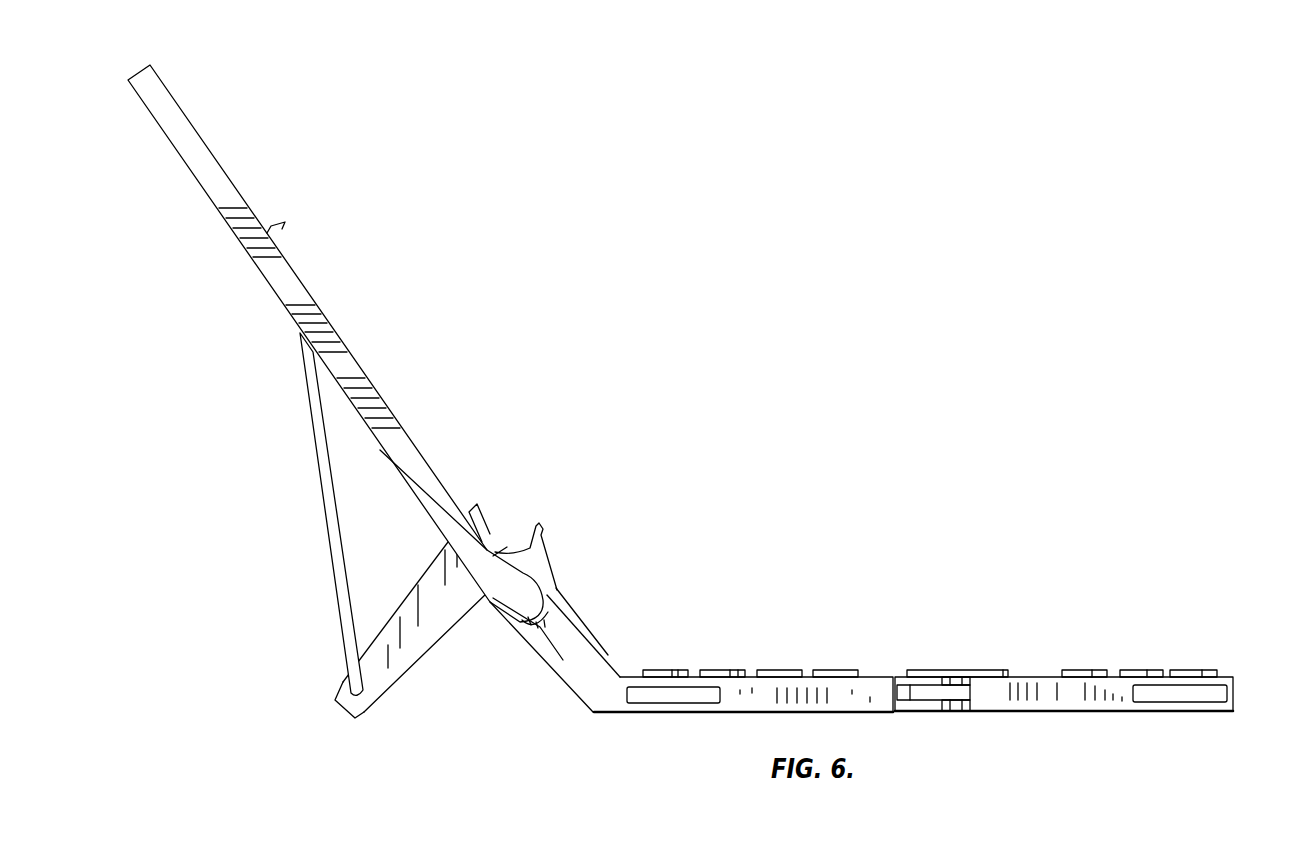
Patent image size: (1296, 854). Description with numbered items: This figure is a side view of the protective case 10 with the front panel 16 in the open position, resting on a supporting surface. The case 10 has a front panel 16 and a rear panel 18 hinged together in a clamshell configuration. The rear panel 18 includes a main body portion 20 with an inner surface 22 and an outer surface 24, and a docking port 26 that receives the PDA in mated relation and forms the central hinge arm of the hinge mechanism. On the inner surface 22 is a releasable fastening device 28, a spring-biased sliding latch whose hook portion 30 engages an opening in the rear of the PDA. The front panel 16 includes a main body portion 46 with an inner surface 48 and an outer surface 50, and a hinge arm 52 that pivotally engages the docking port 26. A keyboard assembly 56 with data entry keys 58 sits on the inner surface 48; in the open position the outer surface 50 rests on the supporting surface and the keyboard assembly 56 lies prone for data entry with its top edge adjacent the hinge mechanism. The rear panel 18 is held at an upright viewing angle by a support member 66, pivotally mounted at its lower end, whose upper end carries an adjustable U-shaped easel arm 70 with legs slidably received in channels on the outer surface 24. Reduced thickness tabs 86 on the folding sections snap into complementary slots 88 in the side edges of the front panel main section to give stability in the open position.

The protective case 10 is at (889, 390).
The front panel 16 is at (979, 704).
The rear panel 18 is at (190, 118).
The main body portion 20 is at (416, 441).
The inner surface 22 is at (331, 323).
The outer surface 24 is at (243, 243).
The docking port 26 is at (553, 539).
The releasable fastening device 28 is at (282, 222).
The hook portion 30 is at (285, 240).
The main body portion 46 is at (887, 674).
The inner surface 48 is at (1052, 677).
The outer surface 50 is at (1133, 713).
The hinge arm 52 is at (587, 665).
The keyboard assembly 56 is at (807, 648).
The data entry keys 58 is at (1090, 677).
The support member 66 is at (378, 667).
The easel arm 70 is at (327, 510).
The reduced thickness tabs 86 is at (1240, 692).
The slots 88 is at (693, 705).